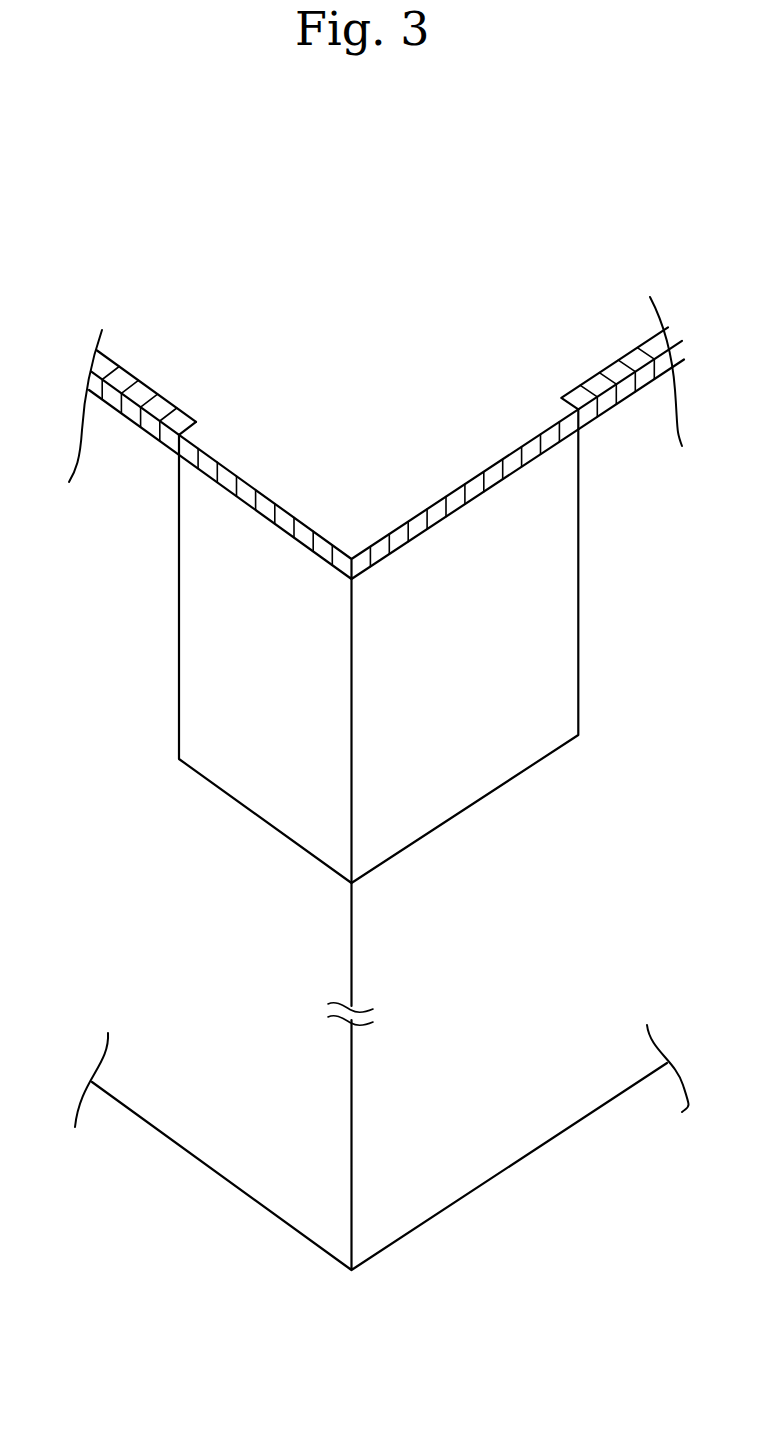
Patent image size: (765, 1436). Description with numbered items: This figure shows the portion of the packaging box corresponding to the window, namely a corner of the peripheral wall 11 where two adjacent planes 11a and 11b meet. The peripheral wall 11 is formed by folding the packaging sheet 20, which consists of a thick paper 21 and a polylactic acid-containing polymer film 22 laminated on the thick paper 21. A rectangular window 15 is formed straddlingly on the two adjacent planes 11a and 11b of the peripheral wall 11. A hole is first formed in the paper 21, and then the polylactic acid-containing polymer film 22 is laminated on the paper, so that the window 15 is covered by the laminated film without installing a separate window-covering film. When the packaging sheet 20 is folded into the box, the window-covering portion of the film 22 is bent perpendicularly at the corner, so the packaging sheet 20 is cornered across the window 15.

The peripheral wall 11 is at (507, 1100).
The plane of the peripheral wall 11a is at (606, 302).
The thick paper 21 is at (607, 364).
The plane of the peripheral wall 11b is at (197, 348).
The packaging sheet 20 is at (137, 392).
The polylactic acid-containing polymer film 22 is at (482, 484).
The rectangular window 15 is at (197, 432).